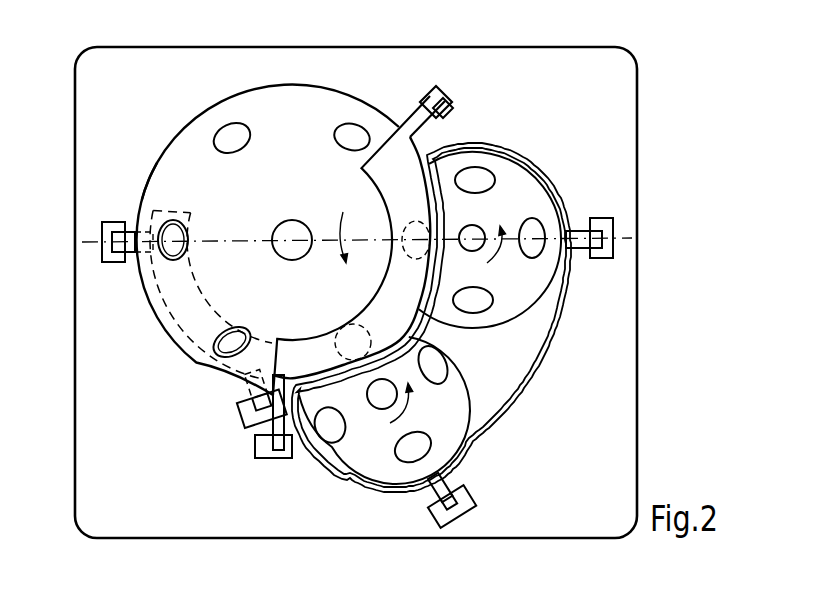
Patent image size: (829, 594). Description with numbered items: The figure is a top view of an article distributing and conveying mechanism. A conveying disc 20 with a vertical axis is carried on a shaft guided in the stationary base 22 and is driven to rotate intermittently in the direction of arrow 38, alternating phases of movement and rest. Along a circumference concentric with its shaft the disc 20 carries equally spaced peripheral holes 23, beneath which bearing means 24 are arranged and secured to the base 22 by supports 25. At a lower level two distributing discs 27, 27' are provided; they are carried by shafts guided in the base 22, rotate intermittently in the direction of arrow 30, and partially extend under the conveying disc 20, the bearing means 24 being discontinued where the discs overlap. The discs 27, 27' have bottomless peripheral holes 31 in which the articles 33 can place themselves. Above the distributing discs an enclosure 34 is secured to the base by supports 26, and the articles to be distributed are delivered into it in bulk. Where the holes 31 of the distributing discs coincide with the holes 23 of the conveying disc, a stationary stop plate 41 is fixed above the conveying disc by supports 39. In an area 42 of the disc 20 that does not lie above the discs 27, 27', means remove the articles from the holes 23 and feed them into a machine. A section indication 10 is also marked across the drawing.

The section line 10 is at (355, 218).
The conveying disc 20 is at (307, 107).
The stationary base 22 is at (582, 58).
The holes 23 is at (227, 136).
The bearing means 24 is at (173, 337).
The supports 25 is at (112, 261).
The supports 26 is at (603, 254).
The distributing disc 27 is at (505, 234).
The distributing disc 27' is at (419, 432).
The arrow 30 is at (452, 315).
The bottomless holes 31 is at (478, 177).
The articles 33 is at (186, 232).
The enclosure 34 is at (542, 357).
The arrow 38 is at (344, 252).
The supports 39 is at (433, 110).
The stationary stop plate 41 is at (387, 157).
The area 42 is at (131, 195).